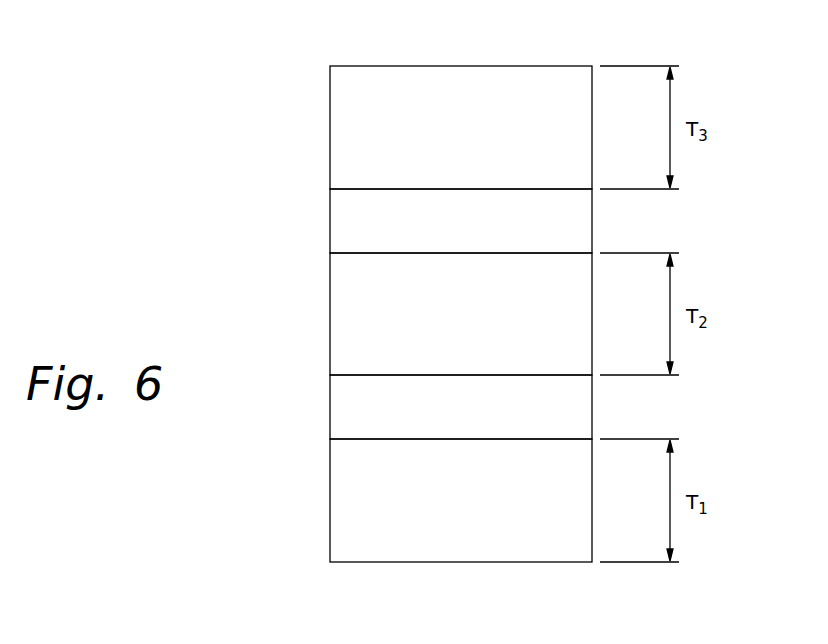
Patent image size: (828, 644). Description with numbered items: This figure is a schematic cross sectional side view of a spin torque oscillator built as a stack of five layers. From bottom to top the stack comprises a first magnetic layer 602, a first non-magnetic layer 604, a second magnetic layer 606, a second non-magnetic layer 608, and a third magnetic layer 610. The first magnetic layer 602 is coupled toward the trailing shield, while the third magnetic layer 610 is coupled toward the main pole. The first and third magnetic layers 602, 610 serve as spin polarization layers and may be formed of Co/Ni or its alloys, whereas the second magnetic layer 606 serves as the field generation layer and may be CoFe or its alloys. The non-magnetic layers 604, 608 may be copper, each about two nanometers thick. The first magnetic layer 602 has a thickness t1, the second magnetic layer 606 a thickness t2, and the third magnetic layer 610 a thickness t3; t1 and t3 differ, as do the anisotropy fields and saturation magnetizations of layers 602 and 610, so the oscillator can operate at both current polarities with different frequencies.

The first magnetic layer 602 is at (348, 502).
The first non-magnetic layer 604 is at (348, 410).
The second magnetic layer 606 is at (348, 315).
The second non-magnetic layer 608 is at (348, 224).
The third magnetic layer 610 is at (348, 132).